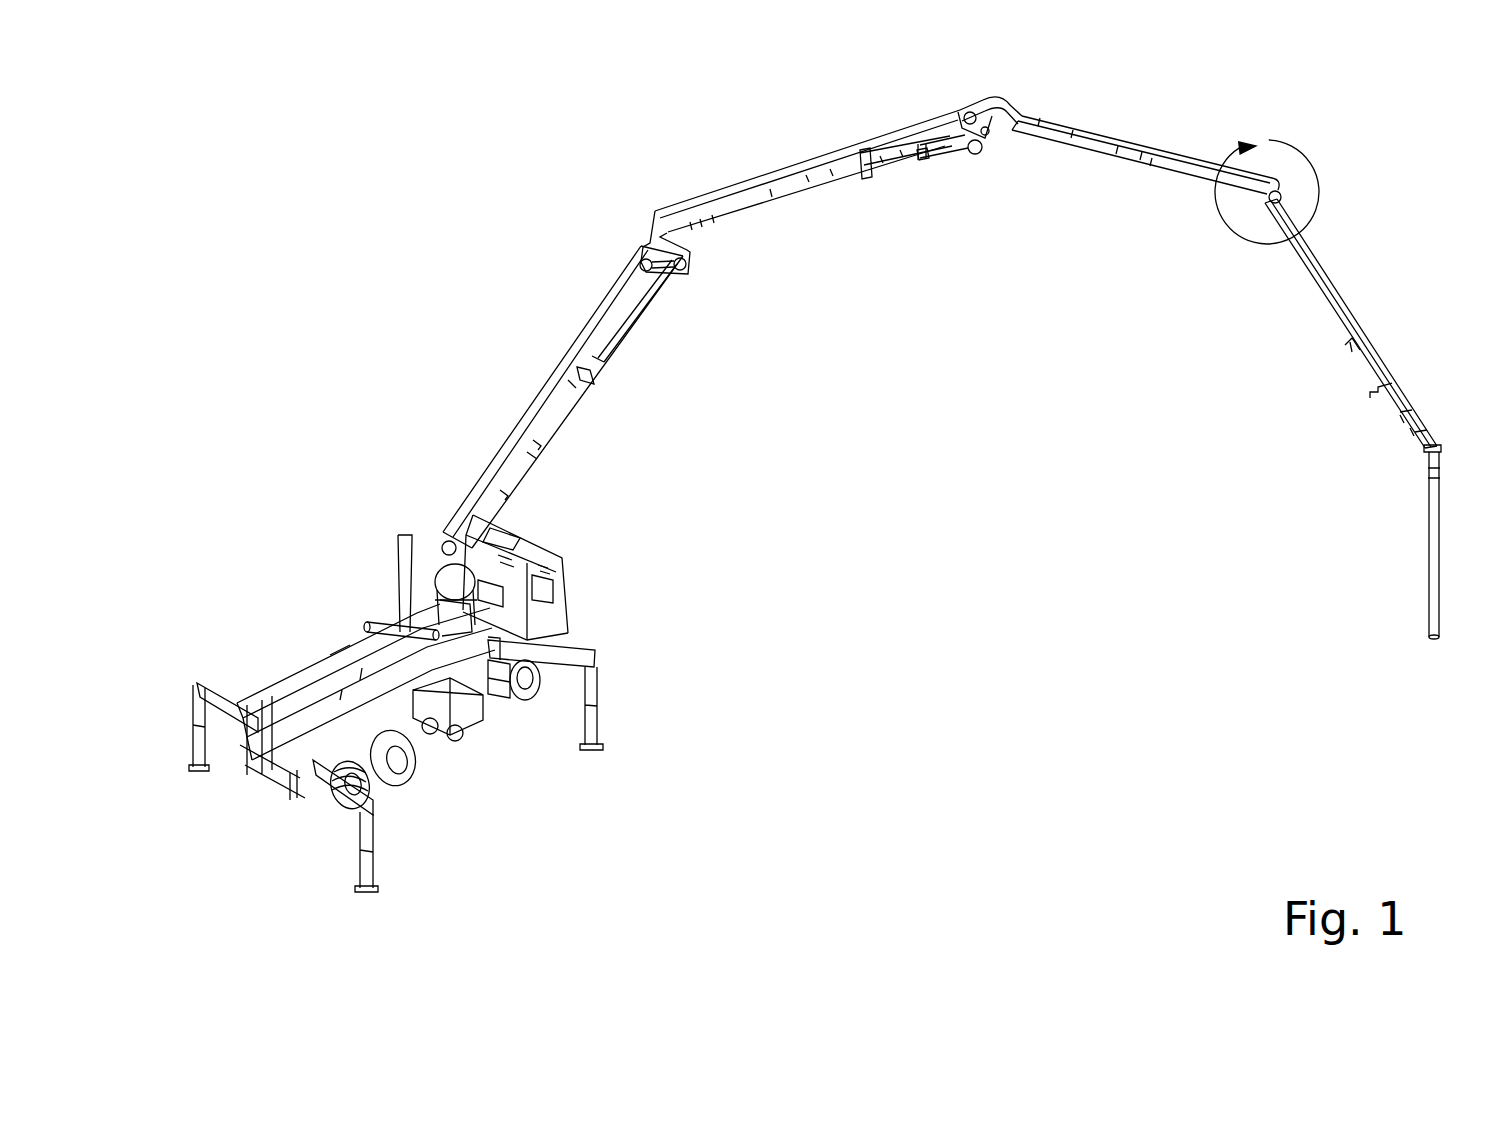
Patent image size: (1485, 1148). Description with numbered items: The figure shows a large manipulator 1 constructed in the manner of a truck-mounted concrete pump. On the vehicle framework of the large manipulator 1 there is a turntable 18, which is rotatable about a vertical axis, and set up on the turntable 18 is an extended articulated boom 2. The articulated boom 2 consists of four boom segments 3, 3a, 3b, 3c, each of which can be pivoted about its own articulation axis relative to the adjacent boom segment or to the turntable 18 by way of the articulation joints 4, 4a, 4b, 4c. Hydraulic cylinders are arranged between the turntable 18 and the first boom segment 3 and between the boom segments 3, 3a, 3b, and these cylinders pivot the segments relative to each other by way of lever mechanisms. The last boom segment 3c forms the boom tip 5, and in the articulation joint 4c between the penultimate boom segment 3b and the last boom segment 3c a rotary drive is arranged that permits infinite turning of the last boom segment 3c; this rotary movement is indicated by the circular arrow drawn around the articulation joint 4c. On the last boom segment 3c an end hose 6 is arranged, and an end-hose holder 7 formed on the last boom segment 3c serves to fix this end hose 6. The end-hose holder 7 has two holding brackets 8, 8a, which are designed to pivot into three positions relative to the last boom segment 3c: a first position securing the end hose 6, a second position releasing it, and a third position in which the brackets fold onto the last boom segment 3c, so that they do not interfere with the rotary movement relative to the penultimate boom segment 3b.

The large manipulator 1 is at (193, 138).
The articulated boom 2 is at (573, 148).
The first boom segment 3 is at (525, 421).
The boom segment 3a is at (768, 177).
The penultimate boom segment 3b is at (1138, 137).
The last boom segment 3c is at (1385, 355).
The articulation joint 4 is at (437, 551).
The articulation joint 4a is at (645, 235).
The articulation joint 4b is at (961, 116).
The articulation joint 4c is at (1276, 190).
The boom tip 5 is at (1420, 450).
The end hose 6 is at (1428, 572).
The end-hose holder 7 is at (1308, 374).
The holding bracket 8 is at (1370, 400).
The holding bracket 8a is at (1352, 340).
The turntable 18 is at (432, 591).